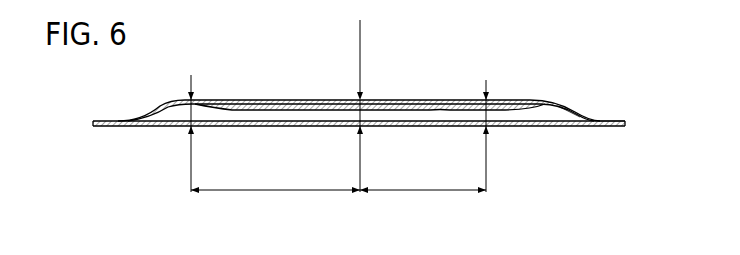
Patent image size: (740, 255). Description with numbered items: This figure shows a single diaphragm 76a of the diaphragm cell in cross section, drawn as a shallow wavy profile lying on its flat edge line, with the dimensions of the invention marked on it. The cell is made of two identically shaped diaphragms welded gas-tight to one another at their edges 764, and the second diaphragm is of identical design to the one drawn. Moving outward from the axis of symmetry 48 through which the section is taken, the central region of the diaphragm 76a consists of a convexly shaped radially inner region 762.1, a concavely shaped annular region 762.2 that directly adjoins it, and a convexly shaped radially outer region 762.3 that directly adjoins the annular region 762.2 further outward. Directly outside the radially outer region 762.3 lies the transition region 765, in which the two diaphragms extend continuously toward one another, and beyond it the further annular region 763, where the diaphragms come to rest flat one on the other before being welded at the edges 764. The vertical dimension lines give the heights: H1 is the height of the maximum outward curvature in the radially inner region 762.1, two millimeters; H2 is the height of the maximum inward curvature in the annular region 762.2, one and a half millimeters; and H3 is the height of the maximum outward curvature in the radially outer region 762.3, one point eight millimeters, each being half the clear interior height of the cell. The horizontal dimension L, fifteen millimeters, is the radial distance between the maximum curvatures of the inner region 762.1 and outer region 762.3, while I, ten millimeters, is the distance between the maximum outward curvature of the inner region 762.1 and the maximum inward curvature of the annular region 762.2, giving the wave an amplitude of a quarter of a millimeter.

The diaphragm 76a is at (257, 77).
The axis of symmetry 48 is at (359, 27).
The radially inner region 762.1 is at (379, 107).
The annular region 762.2 is at (454, 105).
The radially outer region 762.3 is at (531, 103).
The transition region 765 is at (580, 110).
The annular region 763 is at (613, 120).
The edge 764 is at (627, 123).
The height of maximum outward curvature in radially inner region H1 is at (350, 120).
The height of maximum inward curvature in annular region H2 is at (483, 120).
The height of maximum outward curvature in radially outer region H3 is at (184, 120).
The radial distance between maximum curvatures of inner and outer regions L is at (270, 191).
The radial distance between maximum outward and inward curvatures I is at (418, 191).